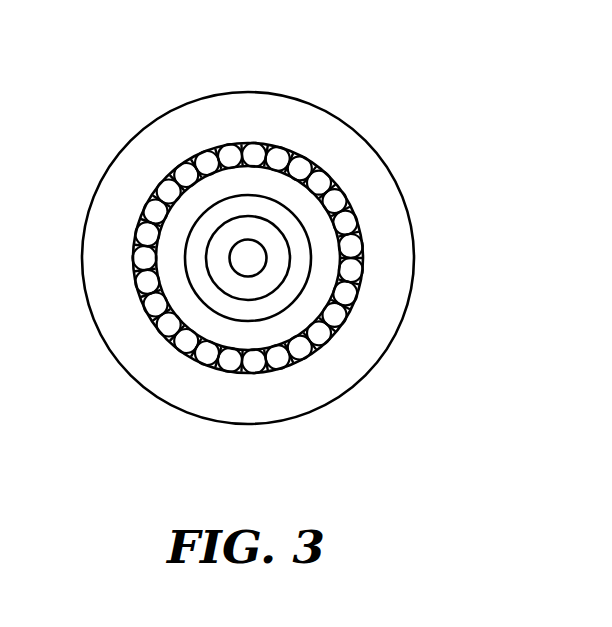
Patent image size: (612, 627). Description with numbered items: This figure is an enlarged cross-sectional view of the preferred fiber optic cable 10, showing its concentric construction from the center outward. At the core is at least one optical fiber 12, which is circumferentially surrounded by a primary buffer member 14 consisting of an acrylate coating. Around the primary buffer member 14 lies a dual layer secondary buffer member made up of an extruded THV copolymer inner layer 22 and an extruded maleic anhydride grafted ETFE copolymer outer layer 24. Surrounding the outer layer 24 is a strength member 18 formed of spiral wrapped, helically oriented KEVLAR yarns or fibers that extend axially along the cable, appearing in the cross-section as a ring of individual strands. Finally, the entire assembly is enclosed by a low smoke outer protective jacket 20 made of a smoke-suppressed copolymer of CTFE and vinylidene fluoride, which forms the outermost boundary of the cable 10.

The fiber optic cable 10 is at (138, 105).
The optical fiber 12 is at (253, 262).
The primary buffer member 14 is at (218, 275).
The strength member 18 is at (317, 180).
The low smoke outer protective jacket 20 is at (237, 107).
The inner layer 22 is at (254, 310).
The outer layer 24 is at (313, 297).